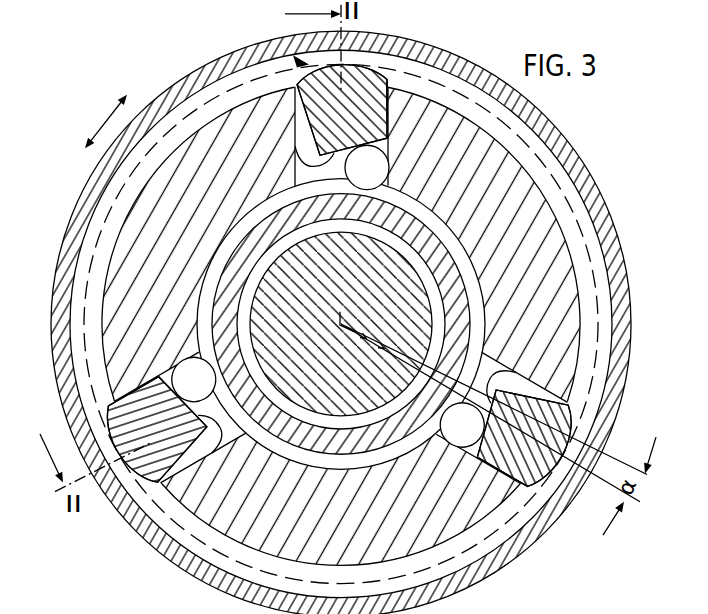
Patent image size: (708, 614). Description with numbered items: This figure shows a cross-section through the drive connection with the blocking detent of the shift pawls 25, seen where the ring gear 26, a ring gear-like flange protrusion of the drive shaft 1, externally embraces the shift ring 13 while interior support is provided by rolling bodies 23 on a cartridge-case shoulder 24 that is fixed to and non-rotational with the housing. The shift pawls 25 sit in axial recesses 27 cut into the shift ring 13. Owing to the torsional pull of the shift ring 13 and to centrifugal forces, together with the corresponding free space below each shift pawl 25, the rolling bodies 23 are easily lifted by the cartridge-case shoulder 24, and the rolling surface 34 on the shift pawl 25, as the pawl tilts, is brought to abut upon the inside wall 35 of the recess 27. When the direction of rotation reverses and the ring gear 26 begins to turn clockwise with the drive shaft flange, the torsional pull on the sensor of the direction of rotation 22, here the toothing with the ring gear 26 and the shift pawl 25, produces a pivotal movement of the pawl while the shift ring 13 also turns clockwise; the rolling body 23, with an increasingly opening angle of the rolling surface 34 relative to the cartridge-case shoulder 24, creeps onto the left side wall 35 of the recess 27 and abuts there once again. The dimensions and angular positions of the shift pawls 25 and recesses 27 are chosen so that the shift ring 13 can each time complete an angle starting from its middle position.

The drive shaft 1 is at (420, 380).
The shift ring 13 is at (155, 270).
The sensor of the direction of rotation 22 is at (300, 68).
The rolling bodies 23 is at (370, 175).
The cartridge-case shoulder 24 is at (444, 263).
The shift pawl 25 is at (366, 100).
The ring gear 26 is at (84, 190).
The axial recesses 27 is at (295, 88).
The rolling surface 34 is at (303, 147).
The inside wall 35 is at (388, 122).